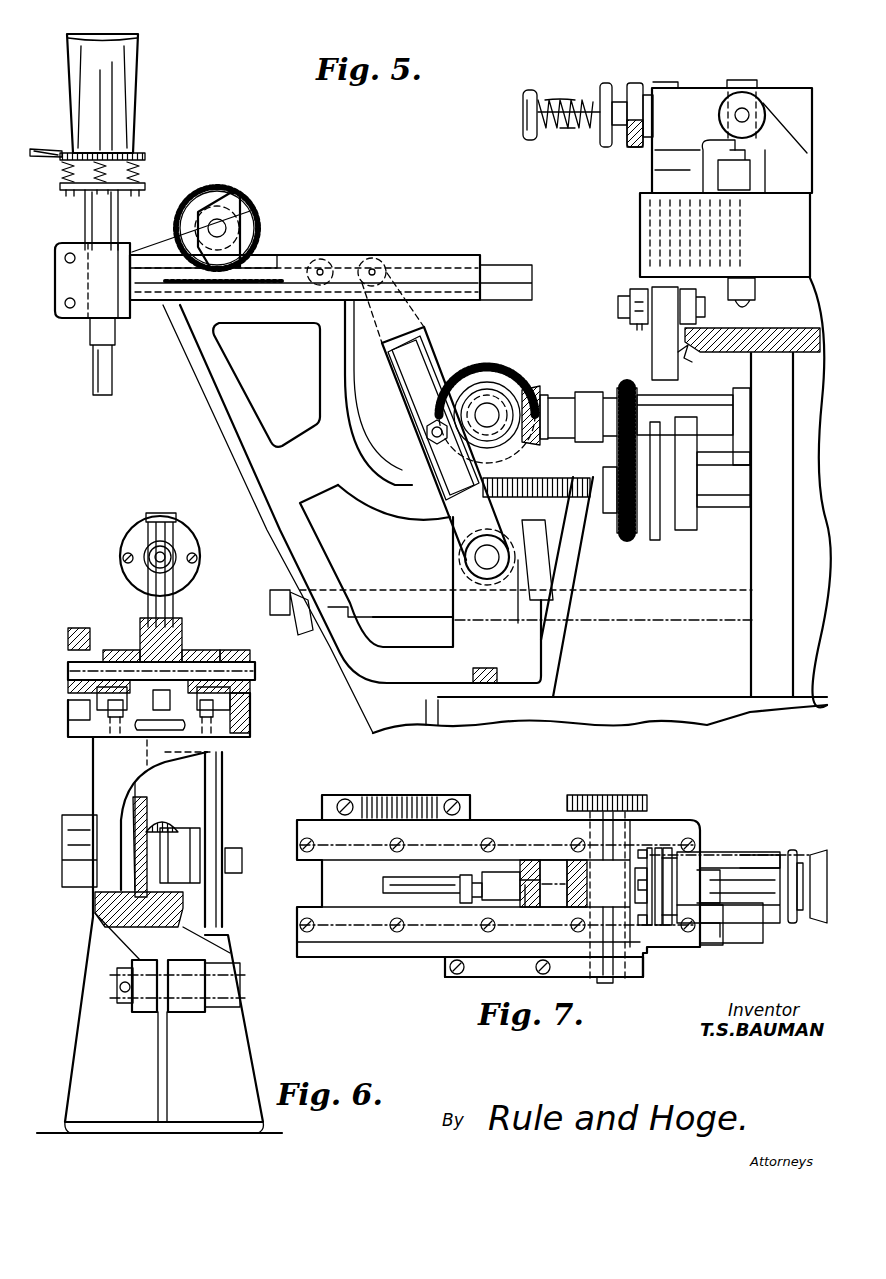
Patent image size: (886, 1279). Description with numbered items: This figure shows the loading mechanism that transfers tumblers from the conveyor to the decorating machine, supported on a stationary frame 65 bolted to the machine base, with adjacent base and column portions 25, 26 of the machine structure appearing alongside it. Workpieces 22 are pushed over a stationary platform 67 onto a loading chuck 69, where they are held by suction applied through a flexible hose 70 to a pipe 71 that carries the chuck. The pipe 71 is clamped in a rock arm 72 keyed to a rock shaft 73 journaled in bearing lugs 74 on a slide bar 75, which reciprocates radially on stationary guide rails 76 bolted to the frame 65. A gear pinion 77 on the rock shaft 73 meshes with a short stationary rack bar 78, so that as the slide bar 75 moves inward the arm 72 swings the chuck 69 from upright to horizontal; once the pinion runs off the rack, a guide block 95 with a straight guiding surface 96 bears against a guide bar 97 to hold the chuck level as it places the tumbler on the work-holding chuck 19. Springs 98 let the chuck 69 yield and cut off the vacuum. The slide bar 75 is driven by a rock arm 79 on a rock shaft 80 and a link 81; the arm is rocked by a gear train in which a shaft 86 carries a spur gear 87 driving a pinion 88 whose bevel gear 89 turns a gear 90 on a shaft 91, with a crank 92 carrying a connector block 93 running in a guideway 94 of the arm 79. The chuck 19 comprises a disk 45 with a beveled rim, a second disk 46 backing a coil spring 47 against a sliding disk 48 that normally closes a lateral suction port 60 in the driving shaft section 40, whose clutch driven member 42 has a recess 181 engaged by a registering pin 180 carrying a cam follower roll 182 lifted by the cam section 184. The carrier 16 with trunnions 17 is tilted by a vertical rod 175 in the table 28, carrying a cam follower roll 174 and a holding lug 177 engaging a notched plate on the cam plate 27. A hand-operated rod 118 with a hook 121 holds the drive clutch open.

In FIG. 5, the carrier 16 is at (688, 96).
In FIG. 5, the trunnions 17 is at (746, 108).
In FIG. 5, the workpiece holding chuck 19 is at (579, 86).
In FIG. 5, the workpiece 22 is at (127, 81).
In FIG. 7, the workpiece 22 is at (738, 882).
In FIG. 5, the base 25 is at (695, 697).
In FIG. 5, the column post 26 is at (755, 578).
In FIG. 5, the stationary cam plate 27 is at (810, 328).
In FIG. 5, the table 28 is at (795, 243).
In FIG. 5, the driving shaft section 40 is at (555, 98).
In FIG. 5, the clutch driven member 42 is at (742, 80).
In FIG. 5, the disk 45 is at (636, 85).
In FIG. 7, the disk 45 is at (800, 858).
In FIG. 5, the second disk 46 is at (604, 140).
In FIG. 5, the coil spring 47 is at (571, 130).
In FIG. 5, the disk 48 is at (531, 140).
In FIG. 5, the lateral port opening 60 is at (523, 114).
In FIG. 5, the frame 65 is at (218, 423).
In FIG. 6, the frame 65 is at (97, 765).
In FIG. 5, the stationary platform 67 is at (57, 150).
In FIG. 5, the loading chuck 69 is at (146, 157).
In FIG. 6, the loading chuck 69 is at (192, 545).
In FIG. 7, the loading chuck 69 is at (668, 848).
In FIG. 5, the flexible hose 70 is at (116, 378).
In FIG. 6, the flexible hose 70 is at (178, 559).
In FIG. 7, the flexible hose 70 is at (432, 877).
In FIG. 5, the pipe 71 is at (82, 318).
In FIG. 6, the pipe 71 is at (142, 553).
In FIG. 7, the pipe 71 is at (496, 874).
In FIG. 5, the rock arm 72 is at (158, 240).
In FIG. 6, the rock arm 72 is at (176, 602).
In FIG. 7, the rock arm 72 is at (550, 868).
In FIG. 5, the rock shaft 73 is at (250, 232).
In FIG. 6, the rock shaft 73 is at (250, 667).
In FIG. 7, the rock shaft 73 is at (616, 786).
In FIG. 6, the bearing lugs 74 is at (118, 650).
In FIG. 7, the bearing lugs 74 is at (622, 842).
In FIG. 6, the slide bar 75 is at (134, 722).
In FIG. 7, the slide bar 75 is at (530, 907).
In FIG. 5, the stationary guide rails 76 is at (148, 257).
In FIG. 6, the stationary guide rails 76 is at (100, 690).
In FIG. 7, the stationary guide rails 76 is at (348, 910).
In FIG. 5, the gear pinion 77 is at (216, 191).
In FIG. 6, the gear pinion 77 is at (86, 628).
In FIG. 7, the gear pinion 77 is at (567, 805).
In FIG. 5, the stationary rack bar 78 is at (258, 270).
In FIG. 6, the stationary rack bar 78 is at (72, 706).
In FIG. 7, the stationary rack bar 78 is at (408, 798).
In FIG. 5, the rock arm 79 is at (438, 367).
In FIG. 6, the rock arm 79 is at (222, 812).
In FIG. 7, the rock arm 79 is at (714, 945).
In FIG. 5, the rock shaft 80 is at (483, 555).
In FIG. 6, the rock shaft 80 is at (241, 986).
In FIG. 5, the link 81 is at (336, 258).
In FIG. 7, the link 81 is at (760, 868).
In FIG. 5, the shaft 86 is at (731, 490).
In FIG. 5, the spur gear 87 is at (628, 534).
In FIG. 5, the pinion 88 is at (630, 388).
In FIG. 5, the bevel gear 89 is at (530, 400).
In FIG. 6, the bevel gear 89 is at (176, 824).
In FIG. 5, the gear 90 is at (505, 374).
In FIG. 6, the gear 90 is at (149, 816).
In FIG. 5, the shaft 91 is at (487, 415).
In FIG. 5, the crank 92 is at (484, 395).
In FIG. 6, the crank 92 is at (200, 850).
In FIG. 5, the connector block 93 is at (436, 420).
In FIG. 6, the connector block 93 is at (236, 858).
In FIG. 5, the guideway 94 is at (407, 380).
In FIG. 5, the guide block 95 is at (233, 203).
In FIG. 6, the guide block 95 is at (250, 688).
In FIG. 7, the guide block 95 is at (634, 979).
In FIG. 5, the straight guiding surface 96 is at (219, 228).
In FIG. 5, the guide bar 97 is at (455, 258).
In FIG. 6, the guide bar 97 is at (252, 708).
In FIG. 7, the guide bar 97 is at (480, 975).
In FIG. 5, the springs 98 is at (140, 172).
In FIG. 7, the springs 98 is at (657, 850).
In FIG. 5, the hand-operated rod 118 is at (686, 585).
In FIG. 5, the hook 121 is at (363, 612).
In FIG. 5, the cam follower roll 174 is at (646, 324).
In FIG. 5, the vertical rod 175 is at (662, 290).
In FIG. 5, the holding lug 177 is at (690, 360).
In FIG. 5, the registering pin 180 is at (748, 157).
In FIG. 5, the recess 181 is at (725, 158).
In FIG. 5, the cam follower roll 182 is at (758, 290).
In FIG. 5, the lifting cam section 184 is at (752, 320).